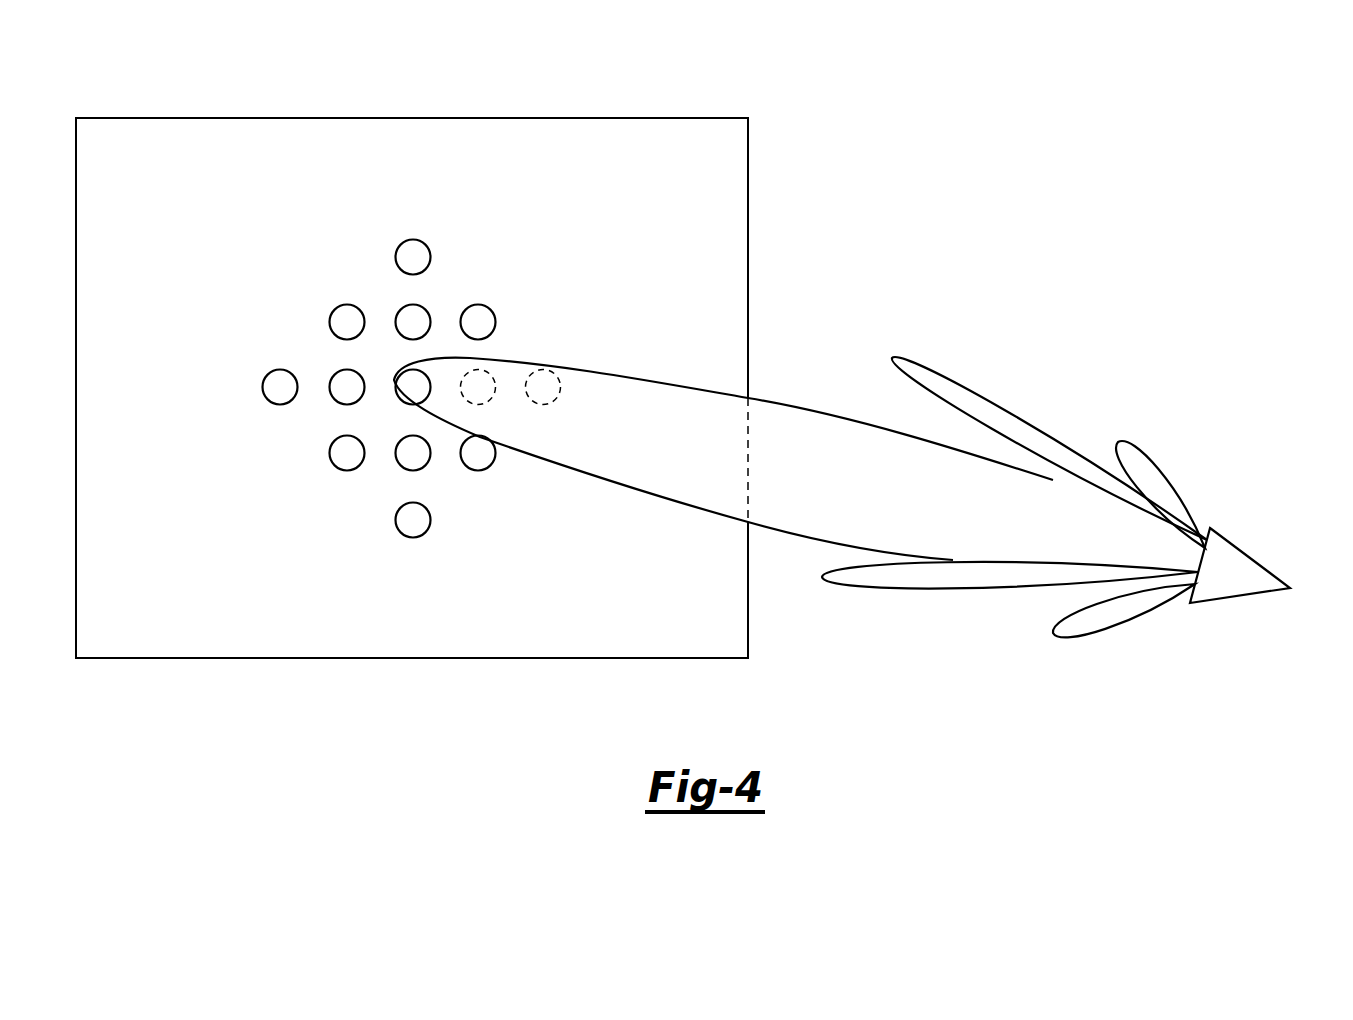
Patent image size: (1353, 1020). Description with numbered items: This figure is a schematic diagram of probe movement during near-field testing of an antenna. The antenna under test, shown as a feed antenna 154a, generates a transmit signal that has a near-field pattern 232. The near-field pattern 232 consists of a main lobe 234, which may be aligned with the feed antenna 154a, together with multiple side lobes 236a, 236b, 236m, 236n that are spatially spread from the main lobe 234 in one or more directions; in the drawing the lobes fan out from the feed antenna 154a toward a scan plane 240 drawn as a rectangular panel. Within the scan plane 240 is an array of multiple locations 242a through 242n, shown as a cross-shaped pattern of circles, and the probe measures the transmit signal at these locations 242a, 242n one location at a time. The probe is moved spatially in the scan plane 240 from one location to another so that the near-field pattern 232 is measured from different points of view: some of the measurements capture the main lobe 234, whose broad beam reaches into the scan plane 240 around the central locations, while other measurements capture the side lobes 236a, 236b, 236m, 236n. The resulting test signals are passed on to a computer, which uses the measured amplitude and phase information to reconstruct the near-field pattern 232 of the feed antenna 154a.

The scan plane 240 is at (598, 118).
The location 242a is at (425, 244).
The location 242n is at (425, 533).
The main lobe 234 is at (781, 406).
The side lobe 236a is at (1153, 468).
The side lobe 236b is at (950, 381).
The side lobe 236m is at (871, 589).
The side lobe 236n is at (1108, 629).
The feed antenna 154a is at (1252, 559).
The near-field pattern 232 is at (1127, 343).